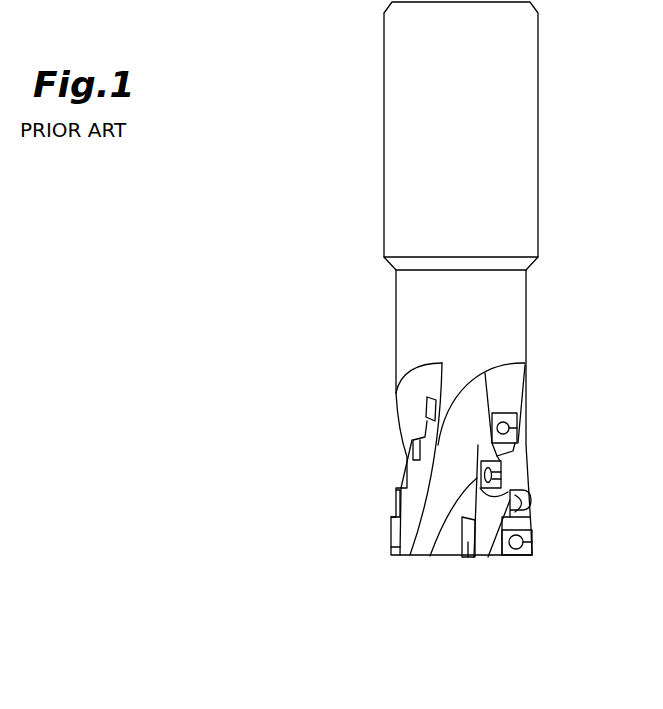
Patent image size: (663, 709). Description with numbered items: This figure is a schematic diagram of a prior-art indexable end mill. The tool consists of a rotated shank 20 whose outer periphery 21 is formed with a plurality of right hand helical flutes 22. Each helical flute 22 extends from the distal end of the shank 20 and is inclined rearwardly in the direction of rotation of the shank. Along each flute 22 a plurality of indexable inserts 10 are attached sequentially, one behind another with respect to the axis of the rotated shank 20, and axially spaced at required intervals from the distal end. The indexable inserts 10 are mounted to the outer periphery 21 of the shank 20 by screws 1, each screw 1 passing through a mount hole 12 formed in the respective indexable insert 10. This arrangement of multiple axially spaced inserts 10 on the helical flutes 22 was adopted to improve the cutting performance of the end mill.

The screw 1 is at (527, 382).
The indexable insert 10 is at (425, 410).
The mount hole 12 is at (519, 427).
The shank 20 is at (543, 181).
The outer periphery 21 is at (418, 296).
The right hand helical flute 22 is at (410, 395).